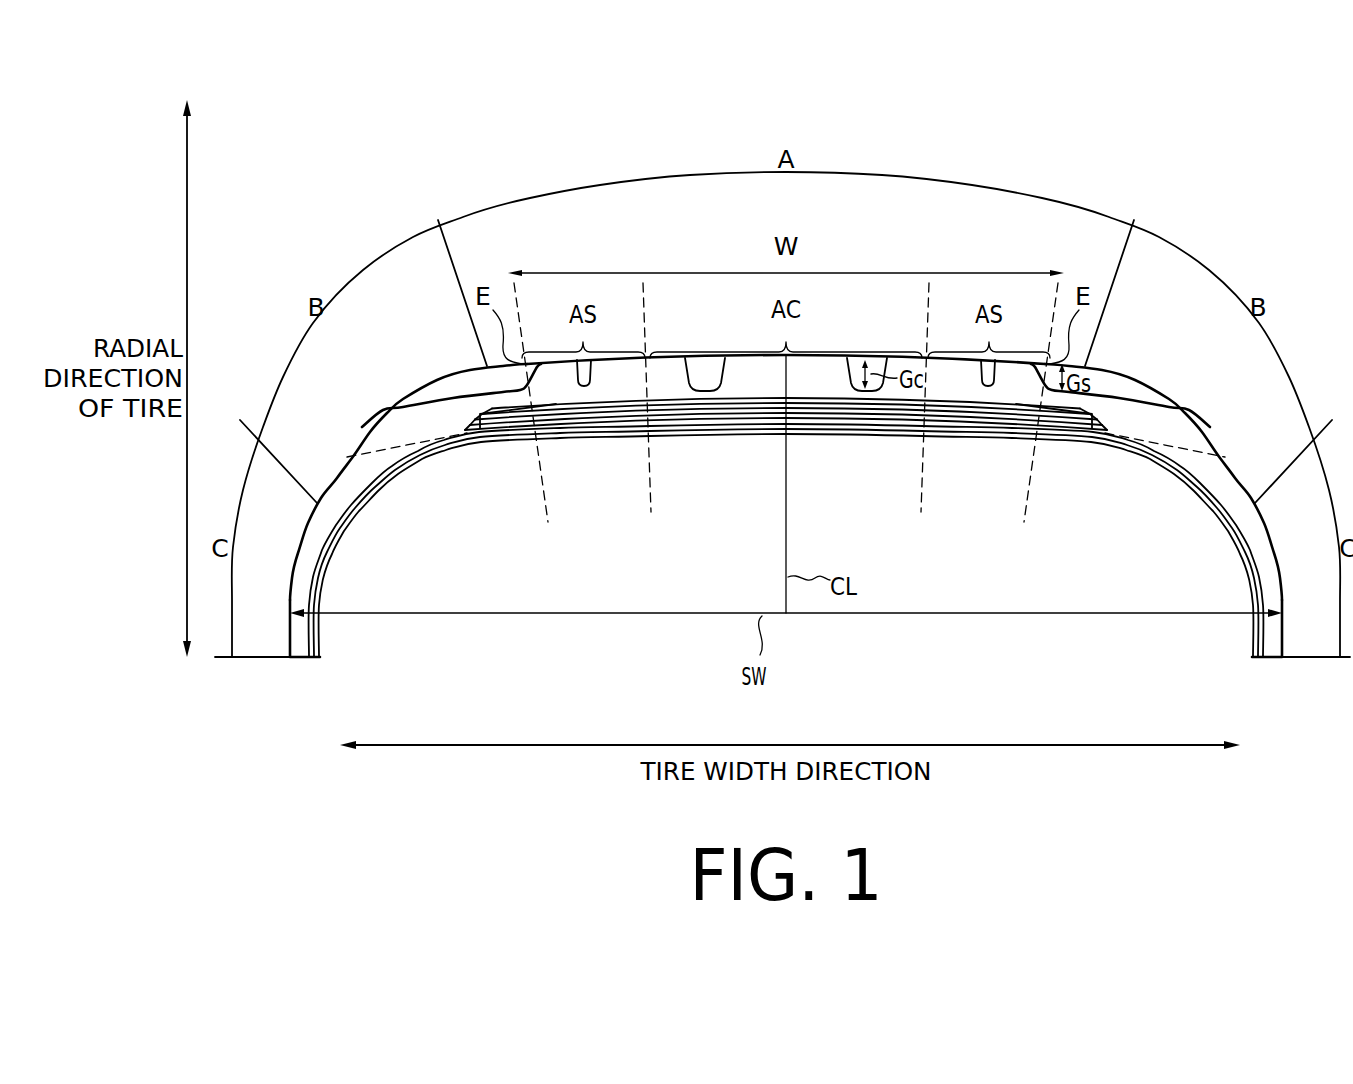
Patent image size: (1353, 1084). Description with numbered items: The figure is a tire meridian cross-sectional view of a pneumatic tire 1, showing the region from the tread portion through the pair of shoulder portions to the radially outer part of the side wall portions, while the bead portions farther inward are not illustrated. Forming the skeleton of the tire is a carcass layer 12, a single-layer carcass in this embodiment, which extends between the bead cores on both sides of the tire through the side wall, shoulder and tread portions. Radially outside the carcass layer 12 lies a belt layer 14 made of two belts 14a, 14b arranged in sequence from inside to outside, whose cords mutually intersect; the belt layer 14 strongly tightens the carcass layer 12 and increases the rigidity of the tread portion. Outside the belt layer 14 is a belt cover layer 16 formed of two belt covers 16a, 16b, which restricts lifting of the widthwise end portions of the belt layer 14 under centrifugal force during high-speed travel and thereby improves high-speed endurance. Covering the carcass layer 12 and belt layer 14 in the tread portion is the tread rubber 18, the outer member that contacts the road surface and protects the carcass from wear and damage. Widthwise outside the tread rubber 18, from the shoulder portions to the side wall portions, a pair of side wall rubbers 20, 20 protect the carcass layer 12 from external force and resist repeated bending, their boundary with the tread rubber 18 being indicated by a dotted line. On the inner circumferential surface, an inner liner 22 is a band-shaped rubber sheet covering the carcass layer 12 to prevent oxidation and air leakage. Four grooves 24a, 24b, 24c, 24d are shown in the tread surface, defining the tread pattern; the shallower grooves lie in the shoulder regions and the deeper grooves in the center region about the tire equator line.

The pneumatic tire 1 is at (1222, 432).
The carcass layer 12 is at (1142, 452).
The belt layer 14 is at (786, 507).
The belt 14a is at (980, 416).
The belt 14b is at (1007, 418).
The belt cover layer 16 is at (792, 504).
The belt cover 16a is at (1053, 412).
The belt cover 16b is at (1100, 407).
The tread rubber 18 is at (763, 380).
The side wall rubber 20 is at (300, 603).
The inner liner 22 is at (1240, 550).
The groove 24a is at (620, 377).
The groove 24b is at (710, 377).
The groove 24c is at (838, 377).
The groove 24d is at (950, 377).